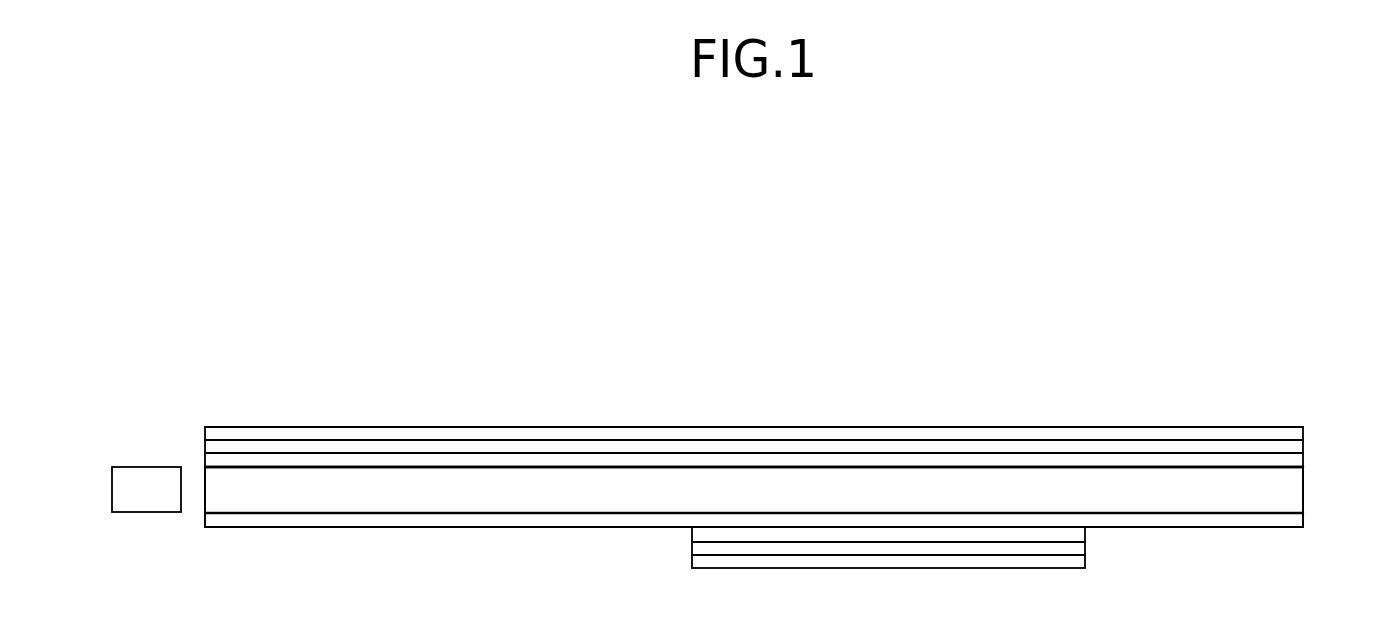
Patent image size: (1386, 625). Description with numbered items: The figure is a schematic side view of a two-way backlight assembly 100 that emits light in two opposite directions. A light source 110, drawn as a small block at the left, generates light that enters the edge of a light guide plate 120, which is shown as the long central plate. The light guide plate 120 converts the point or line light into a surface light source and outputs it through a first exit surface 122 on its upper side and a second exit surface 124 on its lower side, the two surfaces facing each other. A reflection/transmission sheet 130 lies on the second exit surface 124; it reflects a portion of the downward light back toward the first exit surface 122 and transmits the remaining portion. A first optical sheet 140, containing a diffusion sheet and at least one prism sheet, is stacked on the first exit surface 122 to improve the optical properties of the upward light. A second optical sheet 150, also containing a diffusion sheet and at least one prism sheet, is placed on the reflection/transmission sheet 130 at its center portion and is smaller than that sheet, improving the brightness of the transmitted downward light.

The two-way backlight assembly 100 is at (713, 373).
The light source 110 is at (162, 473).
The light guide plate 120 is at (1287, 495).
The first exit surface 122 is at (307, 465).
The second exit surface 124 is at (307, 512).
The reflection/transmission sheet 130 is at (1287, 522).
The first optical sheet 140 is at (1312, 427).
The second optical sheet 150 is at (1093, 527).